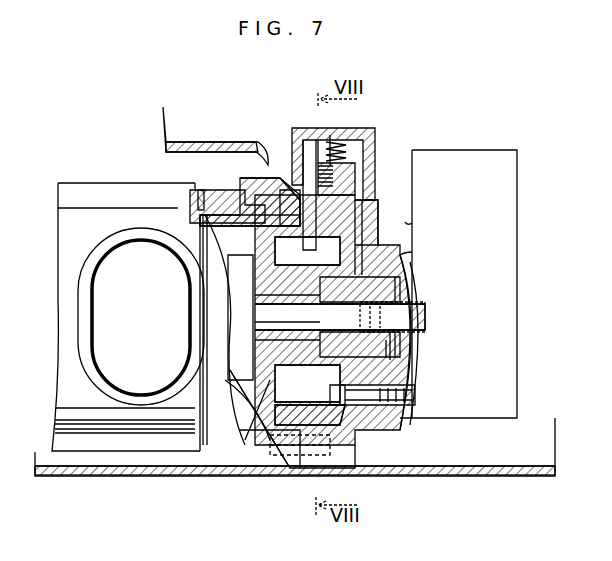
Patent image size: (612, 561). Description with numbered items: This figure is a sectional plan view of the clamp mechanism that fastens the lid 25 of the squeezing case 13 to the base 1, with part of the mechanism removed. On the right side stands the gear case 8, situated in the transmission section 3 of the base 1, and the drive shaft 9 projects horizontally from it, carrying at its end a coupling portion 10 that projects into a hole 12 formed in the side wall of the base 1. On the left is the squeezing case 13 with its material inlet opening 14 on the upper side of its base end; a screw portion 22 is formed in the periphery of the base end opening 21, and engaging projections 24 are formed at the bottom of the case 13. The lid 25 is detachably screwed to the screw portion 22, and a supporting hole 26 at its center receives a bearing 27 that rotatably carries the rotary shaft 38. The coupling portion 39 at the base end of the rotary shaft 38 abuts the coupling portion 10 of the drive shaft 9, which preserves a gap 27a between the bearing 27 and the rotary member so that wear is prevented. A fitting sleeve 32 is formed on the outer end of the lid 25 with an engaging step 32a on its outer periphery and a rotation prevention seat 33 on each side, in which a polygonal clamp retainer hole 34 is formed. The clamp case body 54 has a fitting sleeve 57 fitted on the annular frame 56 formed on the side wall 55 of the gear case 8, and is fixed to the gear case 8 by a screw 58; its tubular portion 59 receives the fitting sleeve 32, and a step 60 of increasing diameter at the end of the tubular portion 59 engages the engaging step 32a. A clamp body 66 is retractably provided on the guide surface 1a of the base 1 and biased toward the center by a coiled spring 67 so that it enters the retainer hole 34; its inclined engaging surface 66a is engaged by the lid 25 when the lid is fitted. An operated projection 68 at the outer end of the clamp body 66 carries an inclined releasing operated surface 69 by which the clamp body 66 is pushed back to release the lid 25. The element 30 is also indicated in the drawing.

The base 1 is at (482, 478).
The guide surface 1a is at (375, 197).
The transmission section 3 is at (428, 470).
The gear case 8 is at (517, 215).
The drive shaft 9 is at (420, 319).
The coupling portion 10 is at (400, 292).
The hole 12 is at (290, 285).
The squeezing case 13 is at (96, 420).
The material inlet opening 14 is at (96, 312).
The base end opening 21 is at (225, 230).
The screw portion 22 is at (215, 235).
The engaging projections 24 is at (305, 455).
The lid 25 is at (260, 420).
The supporting hole 26 is at (268, 388).
The bearing 27 is at (256, 340).
The gap 27a is at (255, 297).
The mounting block 30 is at (206, 184).
The fitting sleeve 32 is at (302, 402).
The engaging step 32a is at (232, 205).
The rotation prevention seat 33 is at (345, 176).
The clamp retainer hole 34 is at (340, 230).
The rotary shaft 38 is at (258, 316).
The coupling portion 39 is at (400, 342).
The clamp case body 54 is at (356, 217).
The side wall 55 is at (408, 221).
The annular frame 56 is at (406, 254).
The fitting sleeve 57 is at (412, 273).
The screw 58 is at (372, 405).
The tubular portion 59 is at (292, 190).
The step 60 is at (266, 195).
The clamp body 66 is at (310, 175).
The engaging surface 66a is at (356, 246).
The coiled spring 67 is at (366, 132).
The operated projection 68 is at (324, 170).
The releasing operated surface 69 is at (366, 150).